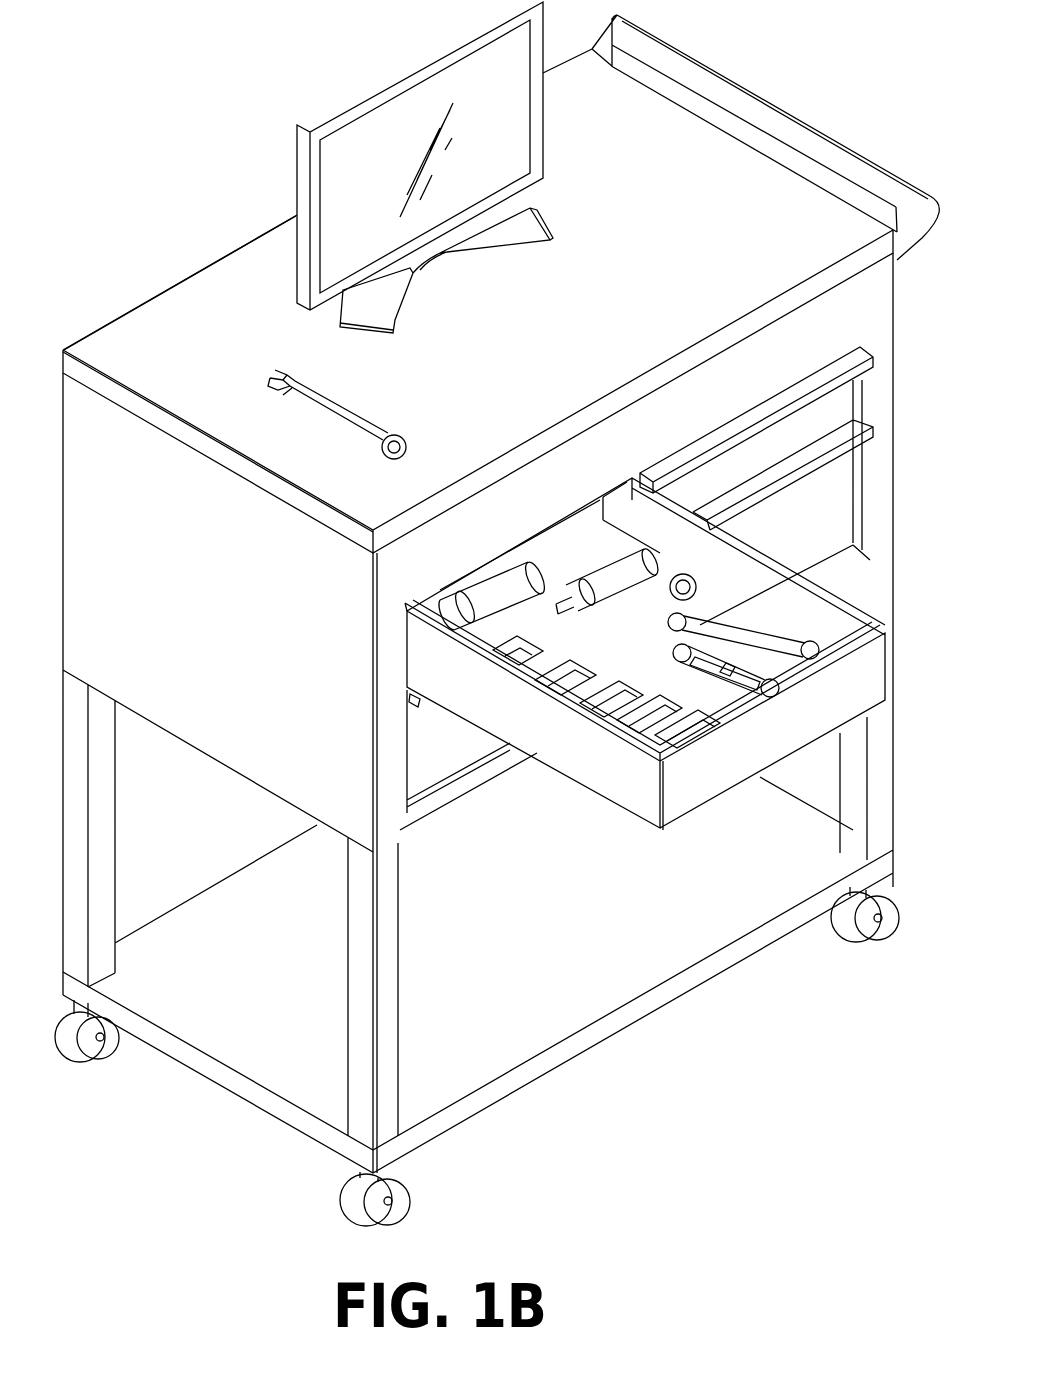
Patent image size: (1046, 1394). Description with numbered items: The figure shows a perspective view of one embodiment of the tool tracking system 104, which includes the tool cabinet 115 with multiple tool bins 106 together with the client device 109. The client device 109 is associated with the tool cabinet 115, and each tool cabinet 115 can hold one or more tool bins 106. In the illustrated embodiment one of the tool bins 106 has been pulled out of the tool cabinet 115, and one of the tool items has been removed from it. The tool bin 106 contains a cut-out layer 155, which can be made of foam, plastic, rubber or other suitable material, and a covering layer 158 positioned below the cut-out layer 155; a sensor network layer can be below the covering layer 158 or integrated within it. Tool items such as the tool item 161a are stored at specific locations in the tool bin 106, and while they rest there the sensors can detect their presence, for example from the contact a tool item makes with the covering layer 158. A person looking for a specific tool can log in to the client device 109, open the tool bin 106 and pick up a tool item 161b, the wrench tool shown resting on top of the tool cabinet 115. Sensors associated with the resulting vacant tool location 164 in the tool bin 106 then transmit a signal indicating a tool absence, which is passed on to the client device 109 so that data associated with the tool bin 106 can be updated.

The tool tracking system 104 is at (860, 45).
The tool tracking bin 106 is at (568, 765).
The client device 109 is at (327, 105).
The tool cabinet 115 is at (130, 310).
The cut-out layer 155 is at (528, 647).
The covering layer 158 is at (679, 583).
The tool item 161a is at (523, 582).
The tool item (wrench tool) 161b is at (378, 435).
The vacant tool location 164 is at (758, 612).